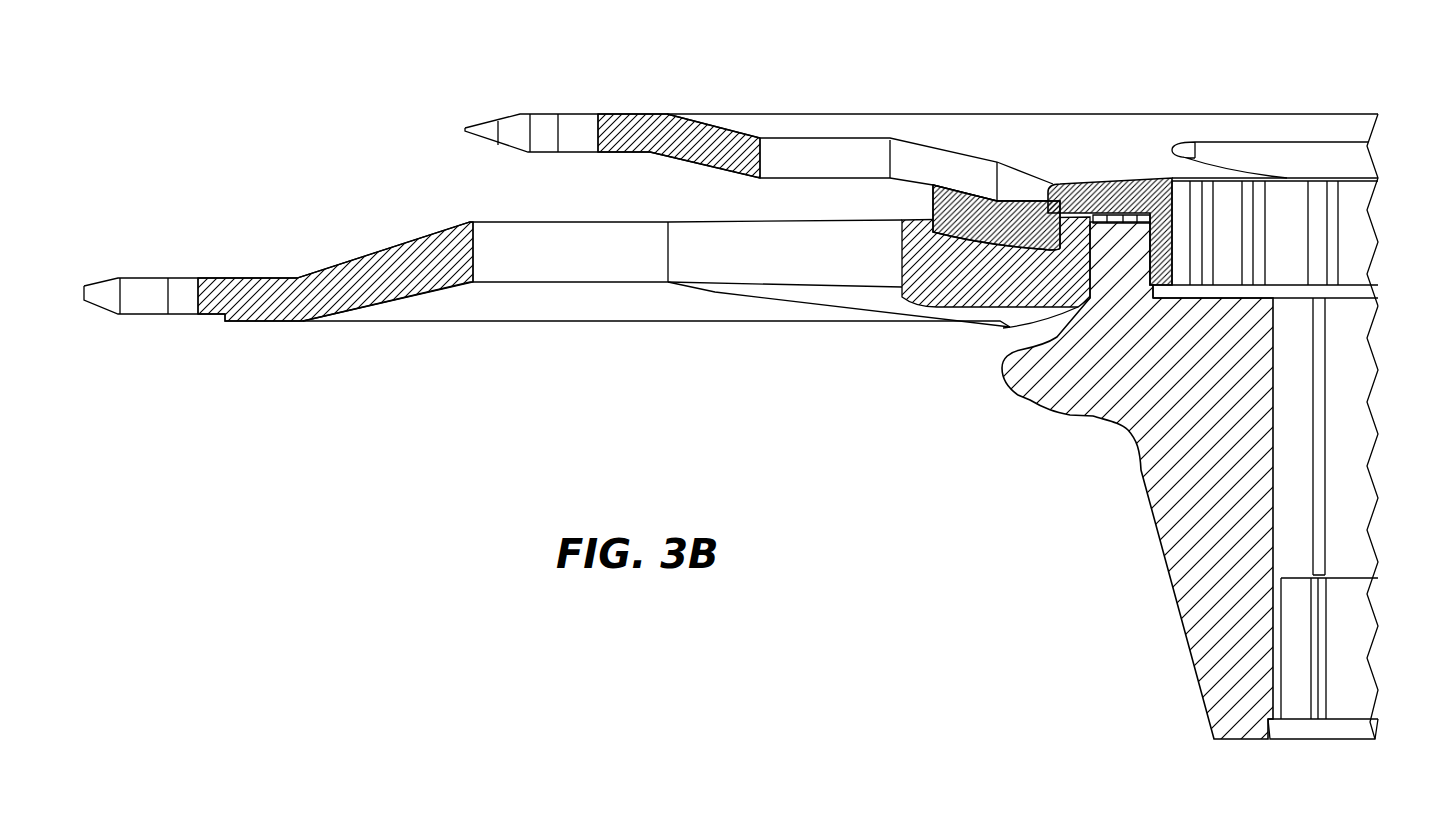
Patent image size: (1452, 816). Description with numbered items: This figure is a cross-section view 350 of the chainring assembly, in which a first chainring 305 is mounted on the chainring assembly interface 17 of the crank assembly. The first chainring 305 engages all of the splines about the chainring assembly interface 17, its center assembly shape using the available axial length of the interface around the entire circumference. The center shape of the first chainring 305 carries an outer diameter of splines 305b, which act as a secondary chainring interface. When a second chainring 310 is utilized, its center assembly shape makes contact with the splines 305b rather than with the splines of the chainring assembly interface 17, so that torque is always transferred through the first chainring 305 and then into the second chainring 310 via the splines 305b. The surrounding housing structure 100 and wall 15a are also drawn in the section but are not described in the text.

The cross-section view 350 is at (243, 92).
The second chainring 310 is at (575, 108).
The first chainring 305 is at (213, 316).
The splines 305b is at (1078, 183).
The chainring assembly interface 17 is at (1027, 400).
The drive mechanism housing 100 is at (1362, 230).
The housing wall 15a is at (1362, 637).